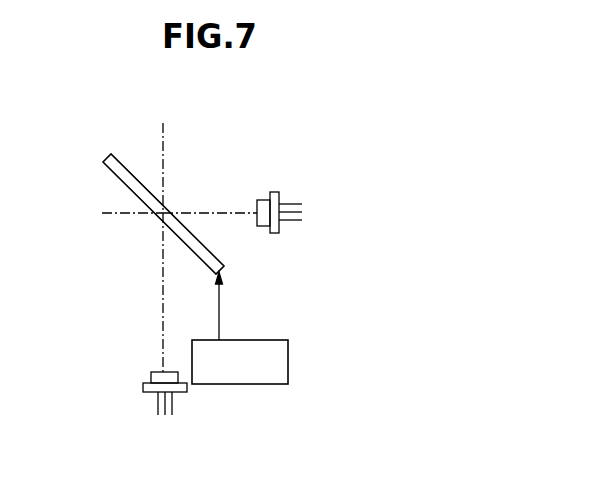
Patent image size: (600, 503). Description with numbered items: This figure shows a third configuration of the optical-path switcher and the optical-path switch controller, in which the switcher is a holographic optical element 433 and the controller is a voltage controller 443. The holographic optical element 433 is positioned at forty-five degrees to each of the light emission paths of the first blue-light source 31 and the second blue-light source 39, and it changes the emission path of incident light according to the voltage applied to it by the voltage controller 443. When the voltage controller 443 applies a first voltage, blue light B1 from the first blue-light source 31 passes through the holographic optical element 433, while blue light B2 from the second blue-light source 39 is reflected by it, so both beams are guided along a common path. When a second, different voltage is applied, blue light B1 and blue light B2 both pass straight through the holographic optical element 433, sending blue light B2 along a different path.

The holographic optical element 433 is at (120, 160).
The first blue-light source 31 is at (272, 192).
The second blue-light source 39 is at (151, 376).
The voltage controller 443 is at (288, 360).
The blue light B1 is at (215, 212).
The blue light B2 is at (166, 143).